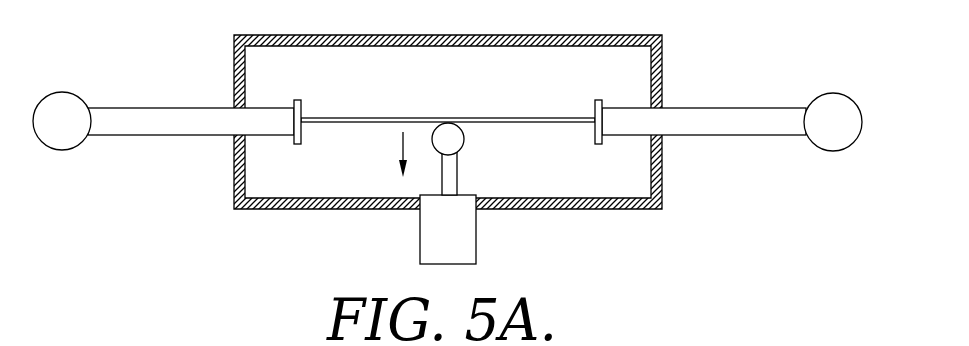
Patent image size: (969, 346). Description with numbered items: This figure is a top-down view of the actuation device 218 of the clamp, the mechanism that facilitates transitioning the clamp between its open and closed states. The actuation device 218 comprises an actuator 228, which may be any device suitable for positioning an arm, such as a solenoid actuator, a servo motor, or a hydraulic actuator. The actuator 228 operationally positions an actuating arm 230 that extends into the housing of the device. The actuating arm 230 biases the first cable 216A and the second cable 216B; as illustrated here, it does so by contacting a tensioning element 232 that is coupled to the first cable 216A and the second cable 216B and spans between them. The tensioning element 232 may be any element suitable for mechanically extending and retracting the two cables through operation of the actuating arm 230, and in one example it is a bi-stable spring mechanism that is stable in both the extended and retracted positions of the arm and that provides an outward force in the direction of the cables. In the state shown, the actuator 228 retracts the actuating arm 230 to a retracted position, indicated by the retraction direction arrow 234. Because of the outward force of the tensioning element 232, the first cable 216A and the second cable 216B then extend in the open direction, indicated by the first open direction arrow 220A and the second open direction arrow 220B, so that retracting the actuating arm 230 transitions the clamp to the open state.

The actuation device 218 is at (393, 30).
The actuator 228 is at (478, 236).
The actuating arm 230 is at (458, 170).
The tensioning element 232 is at (520, 118).
The first cable 216A is at (165, 108).
The second cable 216B is at (725, 108).
The first open direction arrow 220A is at (78, 65).
The second open direction arrow 220B is at (848, 65).
The retraction direction arrow 234 is at (402, 151).